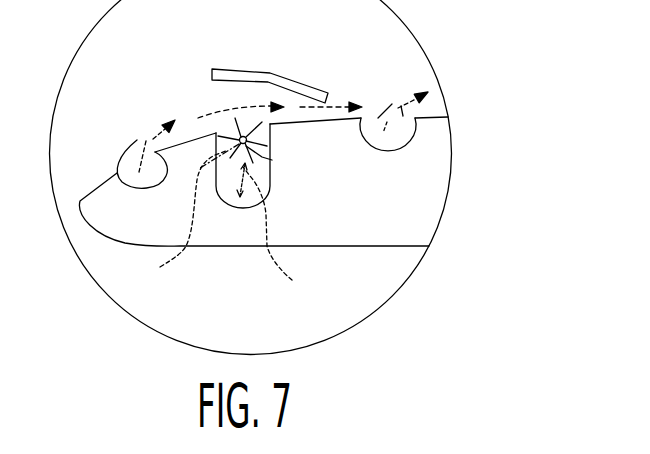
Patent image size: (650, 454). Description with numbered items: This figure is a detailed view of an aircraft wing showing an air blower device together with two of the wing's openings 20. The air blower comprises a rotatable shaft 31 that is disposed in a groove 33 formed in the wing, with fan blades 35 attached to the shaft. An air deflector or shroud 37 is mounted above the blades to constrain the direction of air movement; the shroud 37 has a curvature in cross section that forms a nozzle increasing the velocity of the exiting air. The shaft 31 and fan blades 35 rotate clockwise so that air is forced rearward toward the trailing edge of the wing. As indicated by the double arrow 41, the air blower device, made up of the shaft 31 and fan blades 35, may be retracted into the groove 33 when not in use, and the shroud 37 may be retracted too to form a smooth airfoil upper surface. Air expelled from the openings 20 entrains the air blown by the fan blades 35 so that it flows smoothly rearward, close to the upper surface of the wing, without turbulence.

The openings 20 is at (125, 138).
The shroud 37 is at (252, 68).
The fan blades 35 is at (272, 160).
The groove 33 is at (270, 192).
The rotatable shaft 31 is at (178, 217).
The double arrow 41 is at (280, 235).